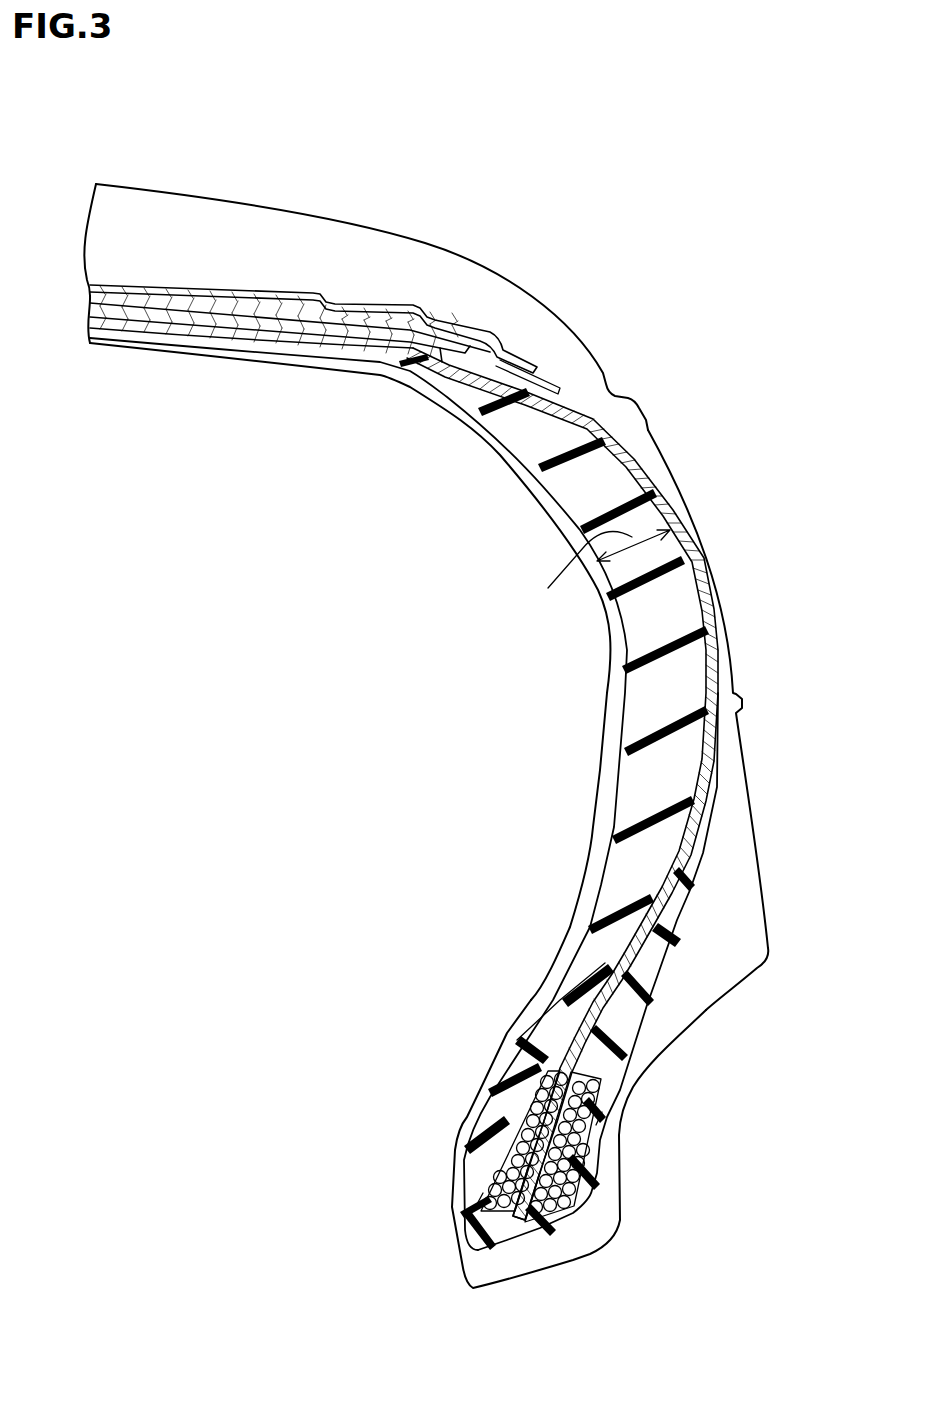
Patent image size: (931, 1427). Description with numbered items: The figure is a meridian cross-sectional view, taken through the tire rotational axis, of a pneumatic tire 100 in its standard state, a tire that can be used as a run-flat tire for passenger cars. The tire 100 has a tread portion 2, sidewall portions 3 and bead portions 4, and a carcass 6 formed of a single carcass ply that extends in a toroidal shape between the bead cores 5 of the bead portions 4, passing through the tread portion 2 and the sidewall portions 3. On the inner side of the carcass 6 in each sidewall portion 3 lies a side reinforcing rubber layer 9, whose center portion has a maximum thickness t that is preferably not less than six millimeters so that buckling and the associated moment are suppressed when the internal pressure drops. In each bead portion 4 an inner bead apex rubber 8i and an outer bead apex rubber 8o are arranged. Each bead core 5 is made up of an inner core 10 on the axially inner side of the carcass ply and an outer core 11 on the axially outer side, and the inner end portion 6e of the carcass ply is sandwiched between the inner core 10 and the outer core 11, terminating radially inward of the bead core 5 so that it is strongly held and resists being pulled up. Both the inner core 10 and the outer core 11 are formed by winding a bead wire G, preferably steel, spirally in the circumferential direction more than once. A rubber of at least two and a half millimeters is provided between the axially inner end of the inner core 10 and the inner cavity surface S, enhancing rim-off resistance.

The pneumatic tire 100 is at (475, 200).
The tread portion 2 is at (207, 175).
The sidewall portion 3 is at (707, 527).
The bead portion 4 is at (636, 1169).
The bead core 5 is at (570, 1227).
The carcass 6 is at (611, 408).
The inner end portion of the carcass ply 6e is at (538, 1110).
The inner bead apex rubber 8i is at (487, 1115).
The outer bead apex rubber 8o is at (623, 1020).
The side reinforcing rubber layer 9 is at (577, 490).
The inner core 10 is at (495, 1227).
The outer core 11 is at (568, 1208).
The inner cavity surface S is at (413, 390).
The maximum thickness of the side reinforcing rubber layer t is at (602, 574).
The bead wire G is at (493, 1190).